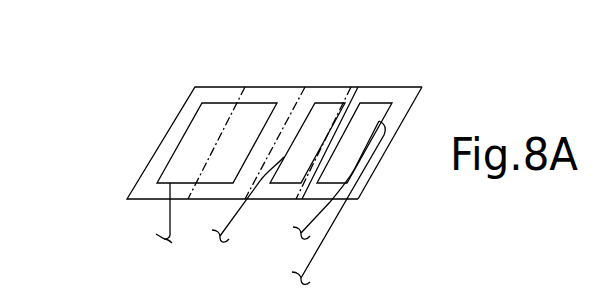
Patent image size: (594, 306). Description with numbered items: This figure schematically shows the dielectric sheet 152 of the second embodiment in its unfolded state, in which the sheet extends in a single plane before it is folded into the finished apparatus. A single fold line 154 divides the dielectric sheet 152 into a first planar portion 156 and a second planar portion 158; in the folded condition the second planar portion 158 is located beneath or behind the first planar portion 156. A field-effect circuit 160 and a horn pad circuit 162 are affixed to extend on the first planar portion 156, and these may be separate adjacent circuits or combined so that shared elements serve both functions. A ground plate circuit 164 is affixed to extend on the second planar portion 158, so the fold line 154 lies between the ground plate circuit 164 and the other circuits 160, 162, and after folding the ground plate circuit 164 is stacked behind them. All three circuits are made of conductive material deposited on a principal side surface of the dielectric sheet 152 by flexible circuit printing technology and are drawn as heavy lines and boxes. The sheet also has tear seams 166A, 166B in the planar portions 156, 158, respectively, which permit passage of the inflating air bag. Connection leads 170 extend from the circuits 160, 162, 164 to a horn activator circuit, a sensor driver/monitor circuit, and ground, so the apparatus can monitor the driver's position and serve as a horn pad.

The dielectric sheet 152 is at (285, 128).
The fold line 154 is at (293, 108).
The first planar portion 156 is at (405, 107).
The second planar portion 158 is at (207, 90).
The field-effect circuit 160 is at (358, 103).
The horn pad circuit 162 is at (330, 87).
The ground plate circuit 164 is at (172, 163).
The tear seam 166A is at (355, 90).
The tear seam 166B is at (245, 88).
The connection leads 170 is at (170, 220).